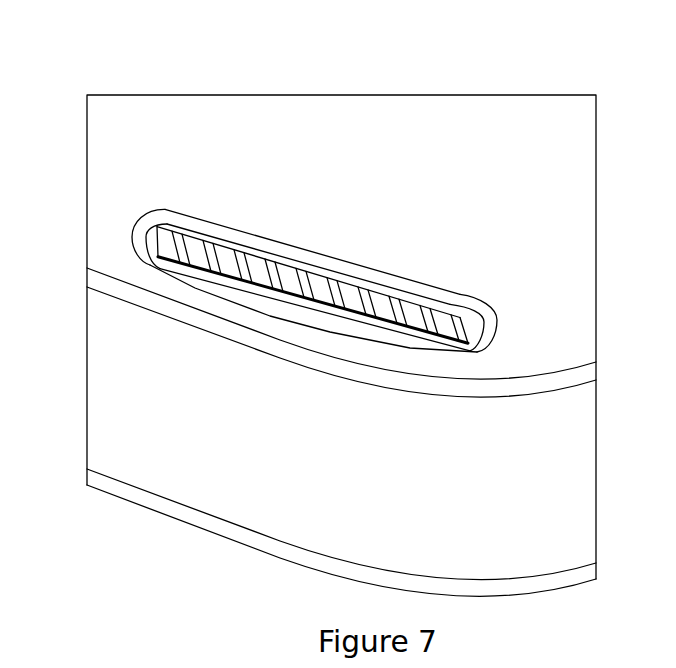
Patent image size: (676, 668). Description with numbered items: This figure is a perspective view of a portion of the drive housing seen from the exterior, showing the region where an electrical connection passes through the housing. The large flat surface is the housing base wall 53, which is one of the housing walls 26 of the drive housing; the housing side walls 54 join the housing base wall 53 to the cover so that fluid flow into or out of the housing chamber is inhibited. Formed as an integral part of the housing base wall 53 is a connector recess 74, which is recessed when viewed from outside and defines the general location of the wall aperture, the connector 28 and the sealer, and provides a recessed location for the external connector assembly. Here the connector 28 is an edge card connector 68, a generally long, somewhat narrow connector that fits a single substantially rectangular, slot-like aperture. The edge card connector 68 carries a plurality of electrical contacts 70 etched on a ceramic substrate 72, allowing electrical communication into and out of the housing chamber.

The housing base wall 53 is at (440, 140).
The housing wall 26 is at (555, 121).
The housing side wall 54 is at (157, 466).
The connector recess 74 is at (358, 265).
The connector 28 is at (151, 208).
The edge card connector 68 is at (308, 240).
The electrical contacts 70 is at (255, 267).
The ceramic substrate 72 is at (447, 328).